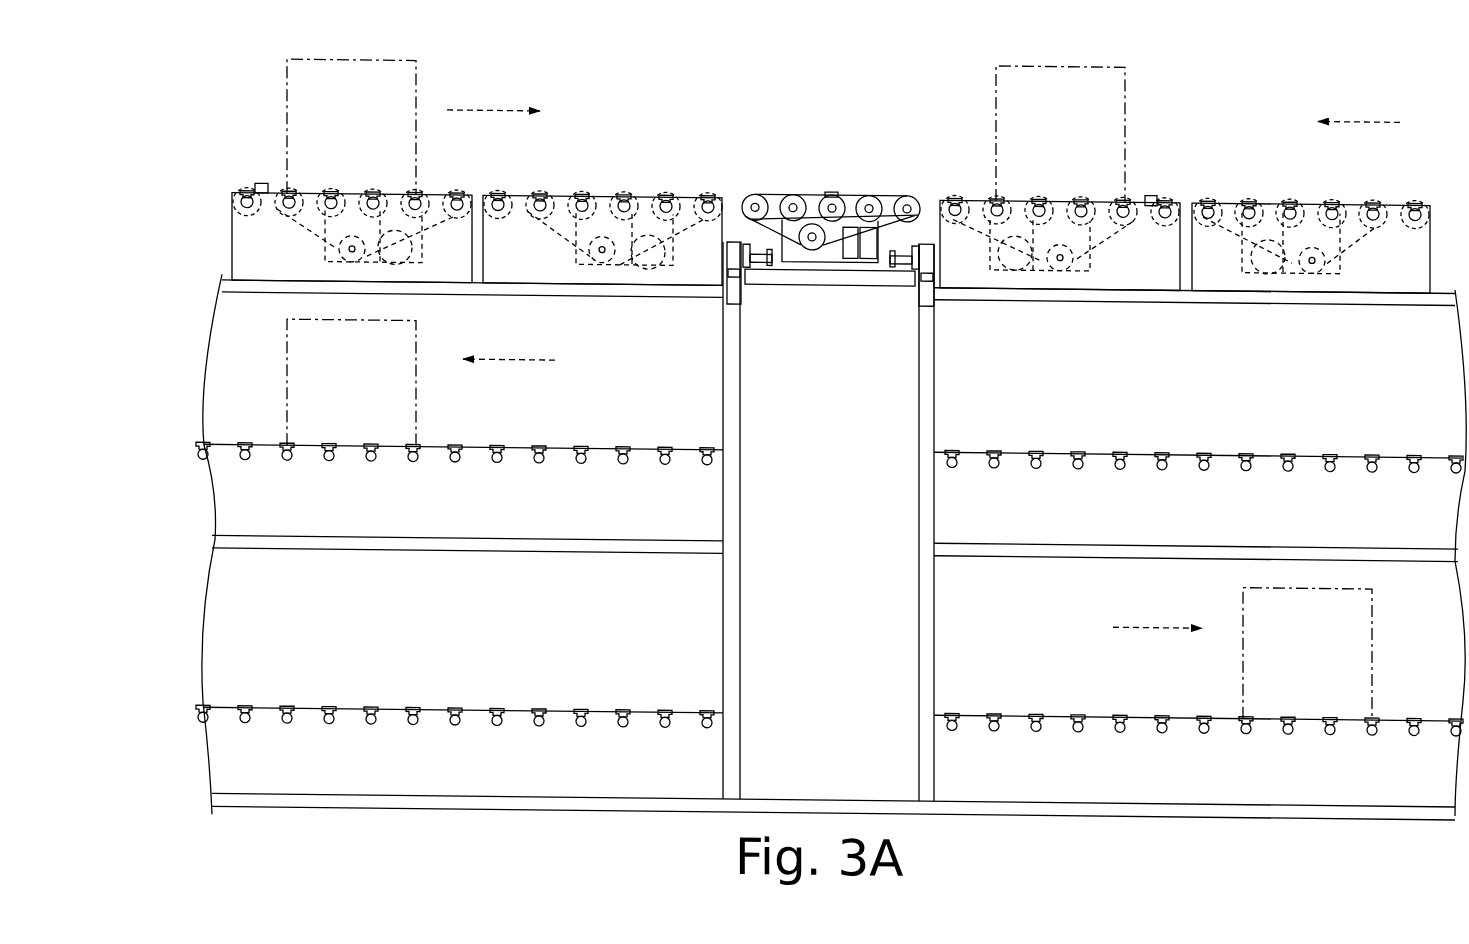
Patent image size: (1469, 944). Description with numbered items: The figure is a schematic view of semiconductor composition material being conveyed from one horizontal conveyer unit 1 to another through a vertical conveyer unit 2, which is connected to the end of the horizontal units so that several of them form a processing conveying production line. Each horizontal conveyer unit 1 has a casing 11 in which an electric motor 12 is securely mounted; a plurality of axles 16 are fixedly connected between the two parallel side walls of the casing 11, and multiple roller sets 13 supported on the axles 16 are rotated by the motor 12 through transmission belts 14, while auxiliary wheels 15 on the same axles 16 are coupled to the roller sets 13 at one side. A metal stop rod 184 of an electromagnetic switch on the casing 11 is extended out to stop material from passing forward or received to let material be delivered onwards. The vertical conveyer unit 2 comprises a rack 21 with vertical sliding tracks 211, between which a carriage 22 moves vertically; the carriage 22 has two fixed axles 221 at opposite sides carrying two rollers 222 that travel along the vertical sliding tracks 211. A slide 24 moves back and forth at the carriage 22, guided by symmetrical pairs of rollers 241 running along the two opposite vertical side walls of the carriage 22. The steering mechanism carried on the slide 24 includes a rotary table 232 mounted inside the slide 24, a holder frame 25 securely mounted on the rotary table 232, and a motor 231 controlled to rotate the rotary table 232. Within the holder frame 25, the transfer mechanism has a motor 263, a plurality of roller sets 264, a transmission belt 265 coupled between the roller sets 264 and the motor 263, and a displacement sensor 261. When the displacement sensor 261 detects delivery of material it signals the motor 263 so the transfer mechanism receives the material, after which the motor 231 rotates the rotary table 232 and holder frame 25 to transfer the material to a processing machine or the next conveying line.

The horizontal conveyer unit 1 is at (1319, 255).
The casing 11 is at (1405, 250).
The electric motor 12 is at (1312, 263).
The roller sets 13 is at (1333, 192).
The transmission belts 14 is at (1234, 216).
The auxiliary wheels 15 is at (1416, 189).
The axles 16 is at (1374, 205).
The metal stop rod 184 is at (1150, 184).
The vertical conveyer unit 2 is at (828, 225).
The rack 21 is at (828, 521).
The vertical sliding tracks 211 is at (921, 690).
The carriage 22 is at (850, 279).
The fixed axles 221 is at (908, 272).
The rollers 222 is at (935, 276).
The motor 231 is at (850, 213).
The rotary table 232 is at (812, 253).
The slide 24 is at (914, 232).
The rollers 241 is at (727, 277).
The holder frame 25 is at (873, 188).
The displacement sensor 261 is at (829, 182).
The motor 263 is at (765, 275).
The roller sets 264 is at (750, 191).
The transmission belt 265 is at (786, 190).